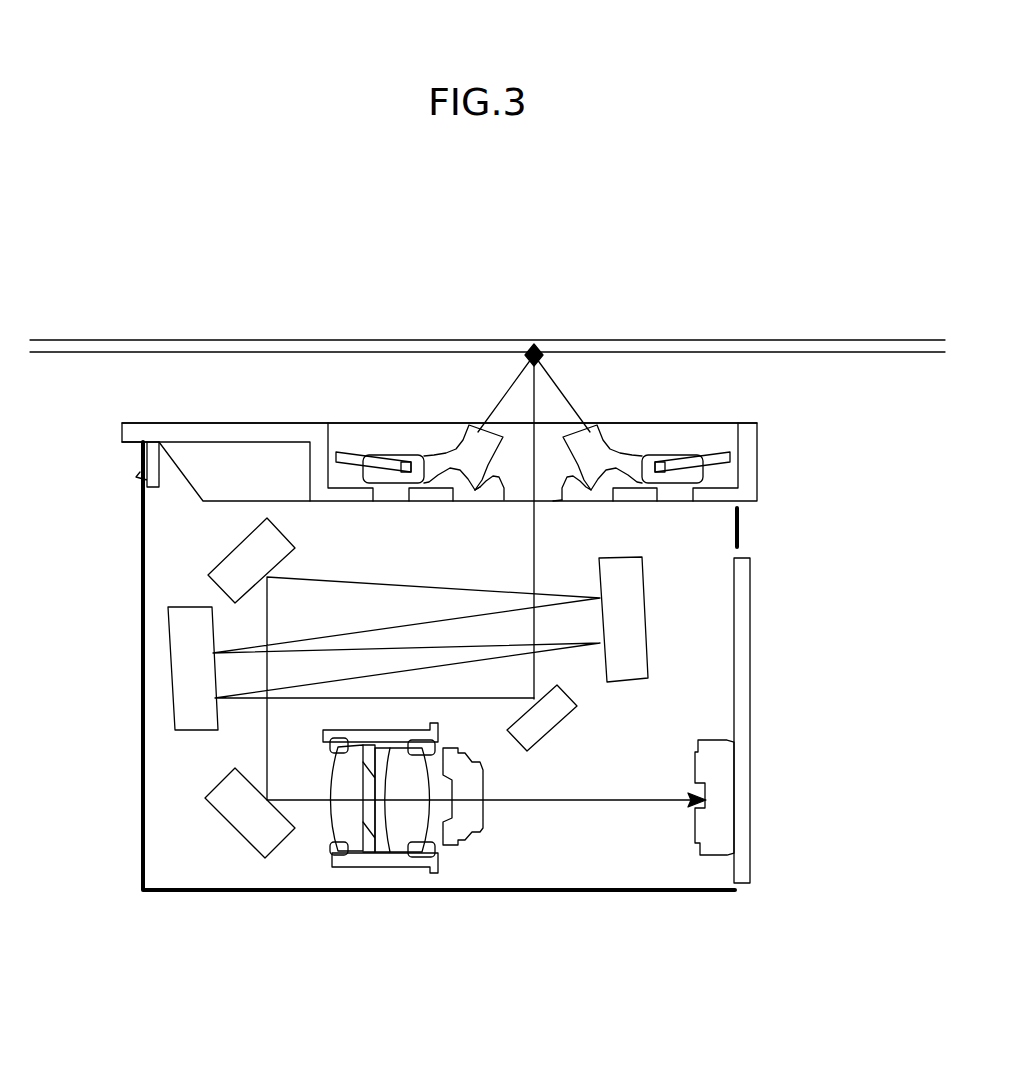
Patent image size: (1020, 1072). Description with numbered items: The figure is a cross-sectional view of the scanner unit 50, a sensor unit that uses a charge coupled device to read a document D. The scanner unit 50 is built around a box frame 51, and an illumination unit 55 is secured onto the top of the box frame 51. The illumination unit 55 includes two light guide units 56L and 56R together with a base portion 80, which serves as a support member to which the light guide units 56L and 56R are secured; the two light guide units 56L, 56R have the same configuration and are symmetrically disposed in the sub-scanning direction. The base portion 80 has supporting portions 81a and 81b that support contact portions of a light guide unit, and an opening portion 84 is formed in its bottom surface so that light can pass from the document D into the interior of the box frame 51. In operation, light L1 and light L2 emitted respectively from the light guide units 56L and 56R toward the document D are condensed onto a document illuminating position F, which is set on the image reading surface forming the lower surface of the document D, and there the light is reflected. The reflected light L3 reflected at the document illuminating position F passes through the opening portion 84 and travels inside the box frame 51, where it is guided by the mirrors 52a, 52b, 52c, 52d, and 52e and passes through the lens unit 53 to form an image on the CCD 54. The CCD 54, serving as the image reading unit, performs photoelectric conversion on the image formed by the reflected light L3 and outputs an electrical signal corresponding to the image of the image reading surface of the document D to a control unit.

The document D is at (165, 340).
The document illuminating position F is at (536, 350).
The light L1 is at (505, 393).
The light L2 is at (564, 393).
The reflected light L3 is at (516, 532).
The scanner unit 50 is at (800, 600).
The box frame 51 is at (143, 647).
The mirror 52a is at (557, 728).
The mirror 52b is at (172, 687).
The mirror 52c is at (647, 622).
The mirror 52d is at (230, 553).
The mirror 52e is at (233, 827).
The lens unit 53 is at (458, 880).
The CCD 54 is at (710, 840).
The illumination unit 55 is at (790, 450).
The light guide unit 56L is at (422, 428).
The light guide unit 56R is at (646, 428).
The base portion 80 is at (190, 432).
The supporting portion 81a is at (553, 502).
The supporting portion 81b is at (470, 487).
The opening portion 84 is at (598, 501).